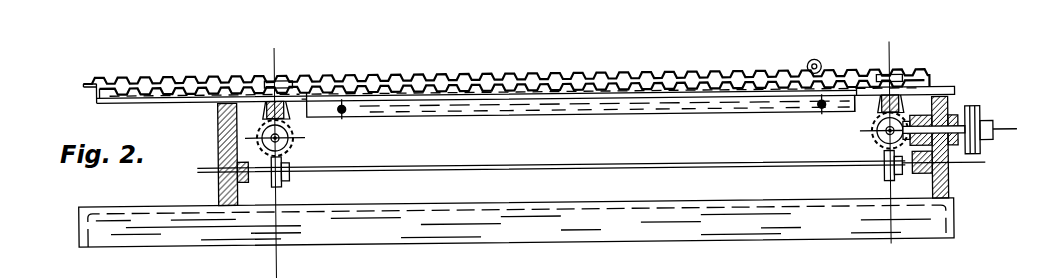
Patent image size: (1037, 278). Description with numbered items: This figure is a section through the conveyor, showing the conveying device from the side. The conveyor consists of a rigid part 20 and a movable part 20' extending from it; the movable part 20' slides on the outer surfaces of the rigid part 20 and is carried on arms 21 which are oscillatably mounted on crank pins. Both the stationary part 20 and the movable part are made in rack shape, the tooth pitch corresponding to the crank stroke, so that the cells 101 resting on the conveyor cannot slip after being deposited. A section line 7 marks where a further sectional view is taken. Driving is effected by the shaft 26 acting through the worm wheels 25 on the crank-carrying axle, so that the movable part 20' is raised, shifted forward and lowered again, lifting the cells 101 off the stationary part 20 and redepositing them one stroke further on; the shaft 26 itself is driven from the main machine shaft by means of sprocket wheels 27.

The section line 7- 7 is at (574, 160).
The rigid part 20 is at (511, 72).
The movable part 20' is at (506, 69).
The arms 21 is at (289, 112).
The worm wheels 25 is at (282, 168).
The shaft 26 is at (558, 166).
The sprocket wheels 27 is at (978, 130).
The cells 101 is at (822, 70).